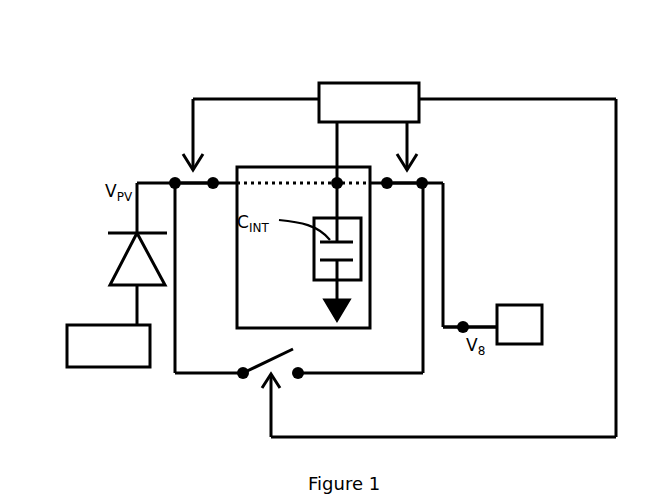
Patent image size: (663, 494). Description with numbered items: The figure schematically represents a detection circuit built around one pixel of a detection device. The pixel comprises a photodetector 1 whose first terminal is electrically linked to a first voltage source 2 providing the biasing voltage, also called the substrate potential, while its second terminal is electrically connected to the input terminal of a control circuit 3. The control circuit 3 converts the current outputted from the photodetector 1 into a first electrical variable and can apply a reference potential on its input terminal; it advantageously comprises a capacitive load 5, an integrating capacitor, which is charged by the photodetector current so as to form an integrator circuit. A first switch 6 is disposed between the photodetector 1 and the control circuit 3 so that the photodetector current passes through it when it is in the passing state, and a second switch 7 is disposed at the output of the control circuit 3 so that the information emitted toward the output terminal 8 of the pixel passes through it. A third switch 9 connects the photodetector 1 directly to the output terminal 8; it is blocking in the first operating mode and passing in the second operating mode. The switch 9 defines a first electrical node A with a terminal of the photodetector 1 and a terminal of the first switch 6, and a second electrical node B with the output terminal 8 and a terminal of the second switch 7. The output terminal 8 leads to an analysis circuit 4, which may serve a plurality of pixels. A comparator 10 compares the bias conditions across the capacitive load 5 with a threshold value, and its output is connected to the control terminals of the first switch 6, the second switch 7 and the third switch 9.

The photodetector 1 is at (112, 277).
The first voltage source 2 is at (67, 347).
The control circuit 3 is at (270, 167).
The analysis circuit 4 is at (542, 336).
The capacitive load 5 is at (313, 272).
The first switch 6 is at (190, 186).
The second switch 7 is at (400, 186).
The output terminal 8 is at (465, 325).
The switch 9 is at (262, 365).
The comparator 10 is at (327, 83).
The first electrical node A is at (172, 181).
The second electrical node B is at (424, 181).